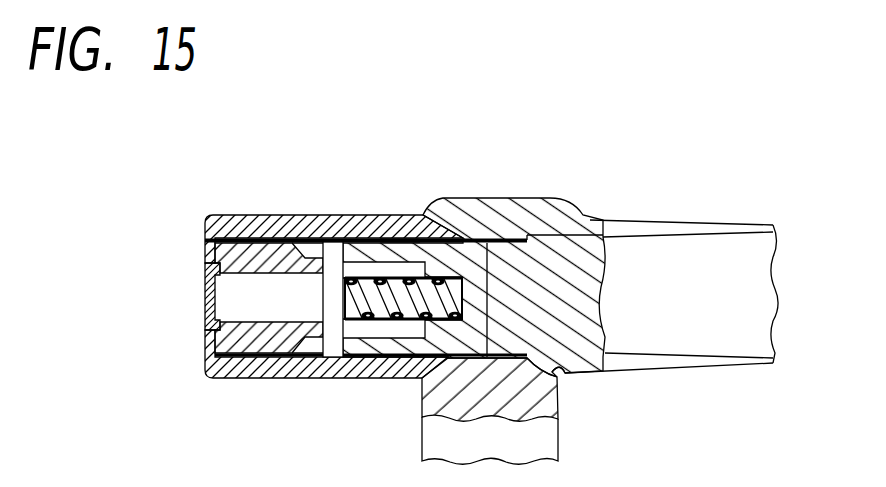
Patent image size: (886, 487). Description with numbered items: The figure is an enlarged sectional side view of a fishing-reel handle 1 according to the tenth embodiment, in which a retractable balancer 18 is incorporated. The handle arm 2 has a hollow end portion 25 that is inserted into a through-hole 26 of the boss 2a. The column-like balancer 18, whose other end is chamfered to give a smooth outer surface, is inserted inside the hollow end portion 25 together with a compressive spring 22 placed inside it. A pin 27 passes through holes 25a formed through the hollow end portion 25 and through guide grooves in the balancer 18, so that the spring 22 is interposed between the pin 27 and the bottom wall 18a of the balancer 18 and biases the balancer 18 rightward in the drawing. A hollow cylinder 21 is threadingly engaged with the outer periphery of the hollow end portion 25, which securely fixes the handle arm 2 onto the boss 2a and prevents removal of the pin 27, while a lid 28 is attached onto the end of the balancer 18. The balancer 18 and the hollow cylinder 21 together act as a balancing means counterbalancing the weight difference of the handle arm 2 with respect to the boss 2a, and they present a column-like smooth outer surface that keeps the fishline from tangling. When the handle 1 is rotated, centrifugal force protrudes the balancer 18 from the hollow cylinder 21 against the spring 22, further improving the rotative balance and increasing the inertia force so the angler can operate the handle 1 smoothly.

The handle 1 is at (634, 138).
The handle arm 2 is at (688, 229).
The boss 2a is at (433, 403).
The balancer 18 is at (230, 338).
The bottom wall 18a is at (505, 248).
The hollow cylinder 21 is at (275, 224).
The spring 22 is at (398, 243).
The hollow end portion 25 is at (425, 262).
The holes 25a is at (335, 250).
The through-hole 26 is at (598, 373).
The pin 27 is at (330, 352).
The lid 28 is at (205, 275).